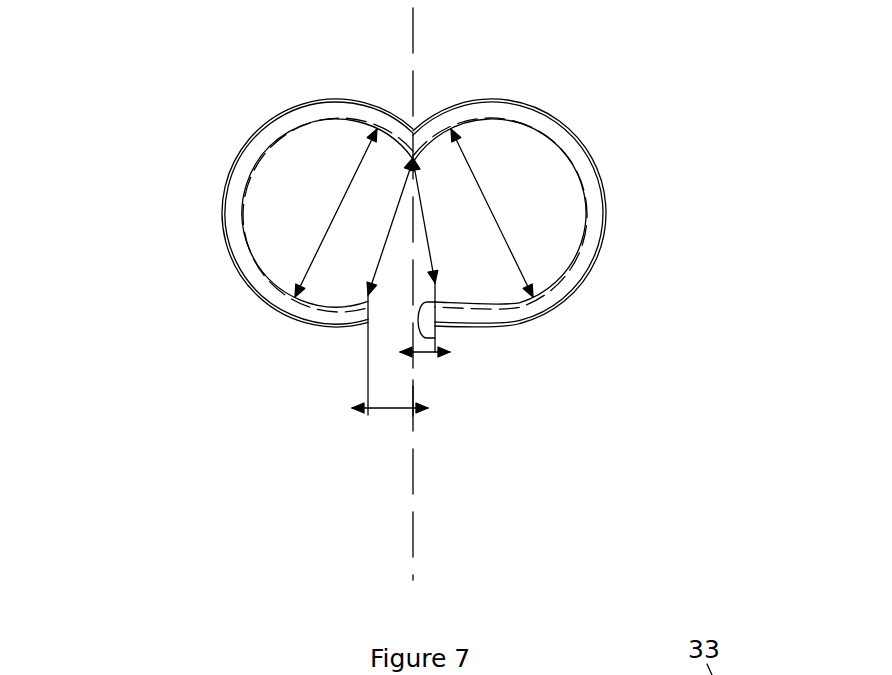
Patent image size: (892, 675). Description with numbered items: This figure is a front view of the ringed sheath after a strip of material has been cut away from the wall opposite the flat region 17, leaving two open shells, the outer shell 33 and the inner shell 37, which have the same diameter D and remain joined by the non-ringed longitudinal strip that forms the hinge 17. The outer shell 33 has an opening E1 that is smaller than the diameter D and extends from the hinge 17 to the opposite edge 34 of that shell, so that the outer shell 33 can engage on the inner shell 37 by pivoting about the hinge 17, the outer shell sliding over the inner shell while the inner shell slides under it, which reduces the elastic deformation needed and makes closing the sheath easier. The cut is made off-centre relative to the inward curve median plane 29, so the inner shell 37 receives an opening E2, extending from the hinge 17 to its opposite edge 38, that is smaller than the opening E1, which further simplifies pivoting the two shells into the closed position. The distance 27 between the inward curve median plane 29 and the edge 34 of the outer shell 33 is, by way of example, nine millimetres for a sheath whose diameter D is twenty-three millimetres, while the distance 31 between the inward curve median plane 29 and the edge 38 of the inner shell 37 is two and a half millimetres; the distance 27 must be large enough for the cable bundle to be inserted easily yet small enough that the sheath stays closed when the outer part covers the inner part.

The flat region / hinge 17 is at (407, 128).
The distance 27 is at (389, 411).
The inward curve median plane 29 is at (414, 385).
The distance 31 is at (422, 356).
The outer shell 33 is at (221, 213).
The edge of the outer shell 34 is at (367, 305).
The inner shell 37 is at (619, 264).
The edge of the inner shell 38 is at (424, 328).
The diameter D is at (357, 171).
The opening of the outer shell E1 is at (405, 197).
The opening of the inner shell E2 is at (431, 252).